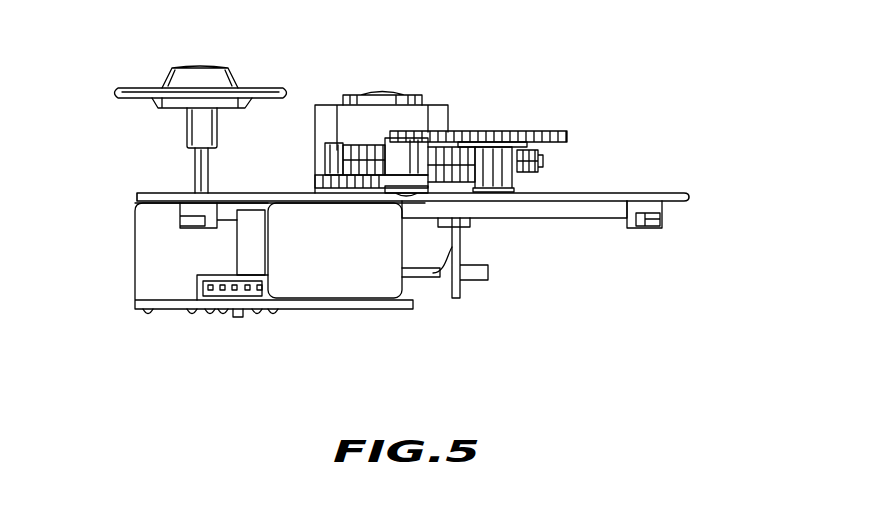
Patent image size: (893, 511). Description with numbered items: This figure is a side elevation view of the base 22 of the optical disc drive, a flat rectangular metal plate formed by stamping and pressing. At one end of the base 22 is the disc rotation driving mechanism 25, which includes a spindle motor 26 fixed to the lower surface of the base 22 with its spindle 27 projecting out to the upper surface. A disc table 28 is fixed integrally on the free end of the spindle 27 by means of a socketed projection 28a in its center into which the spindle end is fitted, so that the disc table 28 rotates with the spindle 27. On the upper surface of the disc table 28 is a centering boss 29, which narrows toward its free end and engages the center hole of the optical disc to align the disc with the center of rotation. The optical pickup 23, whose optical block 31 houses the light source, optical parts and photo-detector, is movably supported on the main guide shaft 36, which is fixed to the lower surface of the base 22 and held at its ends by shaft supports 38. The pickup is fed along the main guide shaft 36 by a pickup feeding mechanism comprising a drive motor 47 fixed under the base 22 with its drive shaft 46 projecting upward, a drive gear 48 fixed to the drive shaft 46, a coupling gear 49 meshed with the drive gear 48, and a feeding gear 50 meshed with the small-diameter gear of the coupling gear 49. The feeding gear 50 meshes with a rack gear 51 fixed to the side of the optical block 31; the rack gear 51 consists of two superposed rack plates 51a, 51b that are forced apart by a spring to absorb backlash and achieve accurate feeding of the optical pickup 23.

The base 22 is at (682, 190).
The optical pickup 23 is at (417, 117).
The disc rotation driving mechanism 25 is at (203, 101).
The spindle motor 26 is at (147, 248).
The spindle 27 is at (202, 168).
The disc table 28 is at (272, 90).
The socketed projection 28a is at (190, 125).
The centering boss 29 is at (233, 78).
The optical block 31 is at (423, 253).
The main guide shaft 36 is at (598, 218).
The shaft support 38 is at (652, 217).
The drive shaft 46 is at (332, 153).
The drive motor 47 is at (355, 280).
The drive gear 48 is at (320, 178).
The coupling gear 49 is at (390, 178).
The feeding gear 50 is at (550, 132).
The rack gear 51 is at (604, 147).
The rack plate 51a is at (548, 150).
The rack plate 51b is at (540, 168).